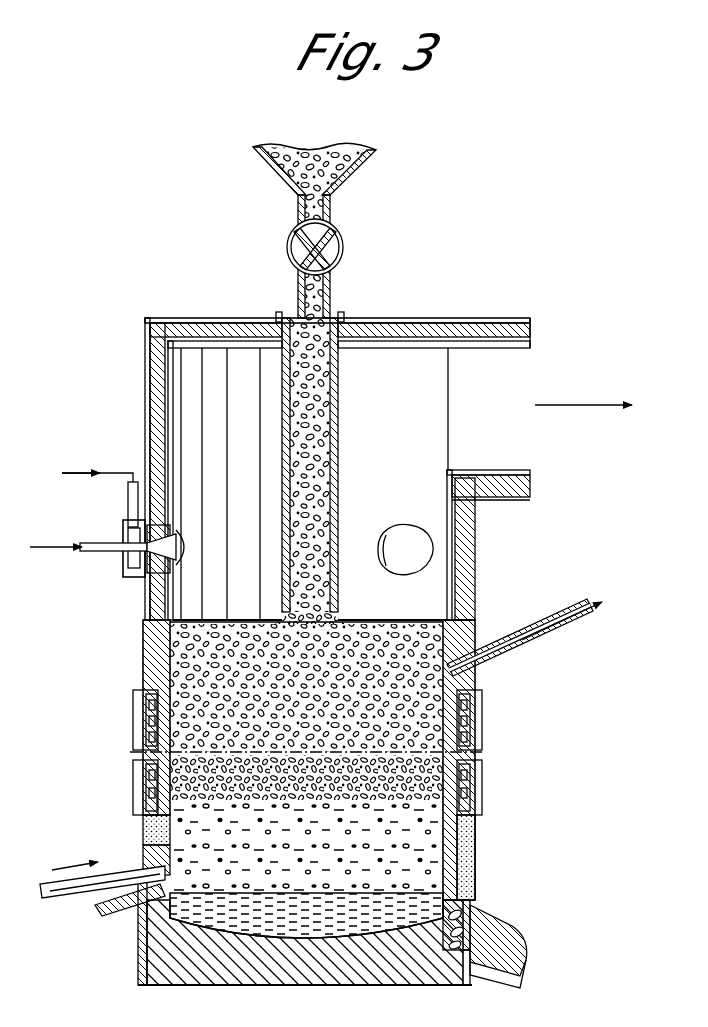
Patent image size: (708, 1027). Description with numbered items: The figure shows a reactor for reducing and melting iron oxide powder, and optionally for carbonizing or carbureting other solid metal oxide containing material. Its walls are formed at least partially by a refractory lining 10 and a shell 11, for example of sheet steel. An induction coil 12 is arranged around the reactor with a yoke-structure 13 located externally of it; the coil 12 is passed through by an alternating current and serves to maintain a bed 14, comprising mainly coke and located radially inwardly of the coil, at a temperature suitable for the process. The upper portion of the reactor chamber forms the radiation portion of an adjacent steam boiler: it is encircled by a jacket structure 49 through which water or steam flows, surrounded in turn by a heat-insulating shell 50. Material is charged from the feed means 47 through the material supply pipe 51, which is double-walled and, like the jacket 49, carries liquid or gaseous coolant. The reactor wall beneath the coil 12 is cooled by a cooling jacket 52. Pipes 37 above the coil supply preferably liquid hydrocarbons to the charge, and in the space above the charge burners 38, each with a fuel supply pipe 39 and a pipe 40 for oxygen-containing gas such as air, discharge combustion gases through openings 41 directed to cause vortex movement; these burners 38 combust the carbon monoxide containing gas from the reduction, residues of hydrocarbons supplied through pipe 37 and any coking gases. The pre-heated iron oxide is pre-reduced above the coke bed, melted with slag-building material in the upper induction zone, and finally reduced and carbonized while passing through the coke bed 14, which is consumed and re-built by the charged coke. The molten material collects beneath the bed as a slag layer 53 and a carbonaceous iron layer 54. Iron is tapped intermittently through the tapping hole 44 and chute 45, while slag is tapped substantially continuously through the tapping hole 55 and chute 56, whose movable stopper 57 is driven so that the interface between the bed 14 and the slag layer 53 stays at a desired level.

The refractory lining 10 is at (148, 632).
The shell 11 is at (146, 666).
The induction coil 12 is at (150, 708).
The yoke-structure 13 is at (138, 736).
The bed 14 is at (190, 778).
The pipes 37 is at (518, 648).
The burners 38 is at (124, 565).
The fuel supply pipe 39 is at (98, 545).
The pipe for supplying oxygen-containing gas 40 is at (128, 500).
The openings 41 is at (180, 540).
The tapping hole 44 is at (460, 928).
The chute 45 is at (494, 950).
The feed means 47 is at (330, 246).
The jacket structure 49 is at (420, 344).
The heat-insulating shell 50 is at (472, 330).
The material supply pipe 51 is at (339, 440).
The cooling jacket 52 is at (150, 832).
The slag layer 53 is at (430, 843).
The carbonaceous iron layer 54 is at (178, 918).
The tapping hole 55 is at (142, 858).
The chute 56 is at (106, 910).
The movable stopper 57 is at (66, 893).